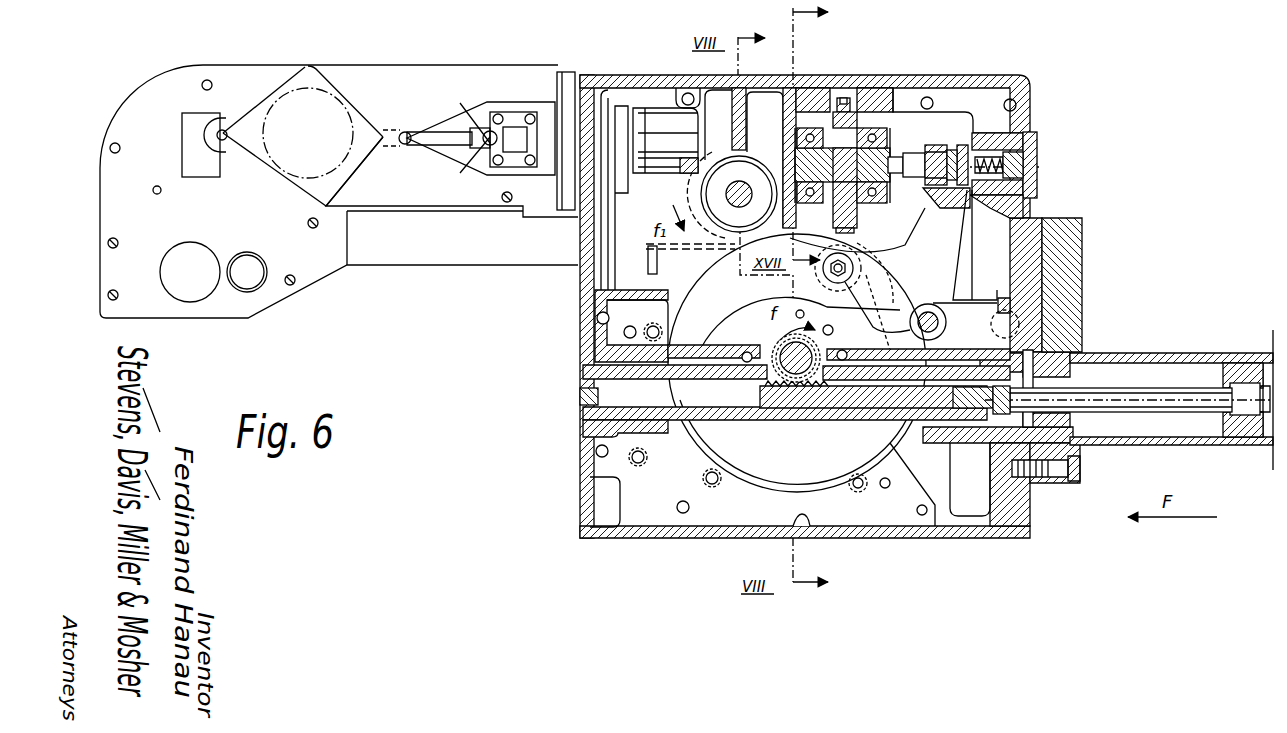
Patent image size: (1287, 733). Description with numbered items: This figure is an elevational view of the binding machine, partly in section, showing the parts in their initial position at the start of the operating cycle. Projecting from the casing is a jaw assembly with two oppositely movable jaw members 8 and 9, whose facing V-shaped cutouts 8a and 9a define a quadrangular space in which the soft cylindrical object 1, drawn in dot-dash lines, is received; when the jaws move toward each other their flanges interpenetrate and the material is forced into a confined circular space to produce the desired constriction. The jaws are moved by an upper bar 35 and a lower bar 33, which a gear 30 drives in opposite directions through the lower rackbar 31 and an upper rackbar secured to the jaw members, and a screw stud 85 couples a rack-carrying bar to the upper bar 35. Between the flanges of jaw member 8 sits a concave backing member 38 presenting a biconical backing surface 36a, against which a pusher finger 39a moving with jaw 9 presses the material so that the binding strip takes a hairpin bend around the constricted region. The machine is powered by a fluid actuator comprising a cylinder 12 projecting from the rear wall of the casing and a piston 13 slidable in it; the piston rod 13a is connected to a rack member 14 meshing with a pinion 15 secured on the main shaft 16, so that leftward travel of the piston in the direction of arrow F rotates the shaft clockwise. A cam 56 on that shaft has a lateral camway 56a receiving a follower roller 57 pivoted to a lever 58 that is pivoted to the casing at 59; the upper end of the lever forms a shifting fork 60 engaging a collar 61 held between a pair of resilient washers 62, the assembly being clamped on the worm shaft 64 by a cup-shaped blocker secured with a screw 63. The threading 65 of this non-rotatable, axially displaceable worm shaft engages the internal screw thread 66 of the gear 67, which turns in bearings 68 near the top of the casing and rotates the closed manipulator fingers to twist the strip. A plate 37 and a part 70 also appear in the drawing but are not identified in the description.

The soft cylindrical object 1 is at (300, 88).
The jaw member 8 is at (247, 82).
The V-shaped cutout 8a is at (287, 183).
The jaw member 9 is at (478, 88).
The V-shaped cutout 9a is at (352, 163).
The cylinder 12 is at (1148, 353).
The piston 13 is at (1225, 425).
The piston rod 13a is at (1157, 412).
The rack member 14 is at (772, 408).
The pinion 15 is at (780, 352).
The main shaft 16 is at (790, 345).
The gear 30 is at (700, 192).
The lower rackbar 31 is at (653, 250).
The lower bar 33 is at (520, 247).
The upper bar 35 is at (657, 130).
The biconical backing surface 36a is at (212, 152).
The mounting plate 37 is at (152, 96).
The concave backing member 38 is at (182, 138).
The pusher finger 39a is at (447, 135).
The cam 56 is at (783, 472).
The lateral camway 56a is at (818, 440).
The follower roller 57 is at (840, 284).
The lever 58 is at (950, 263).
The pivot 59 is at (946, 322).
The shifting fork 60 is at (1018, 216).
The collar 61 is at (950, 150).
The resilient washers 62 is at (933, 145).
The screw 63 is at (1000, 160).
The worm shaft 64 is at (905, 153).
The threading 65 is at (880, 182).
The internal screw thread 66 is at (786, 160).
The gear 67 is at (845, 98).
The bearings 68 is at (810, 128).
The key 70 is at (840, 98).
The screw stud 85 is at (502, 201).